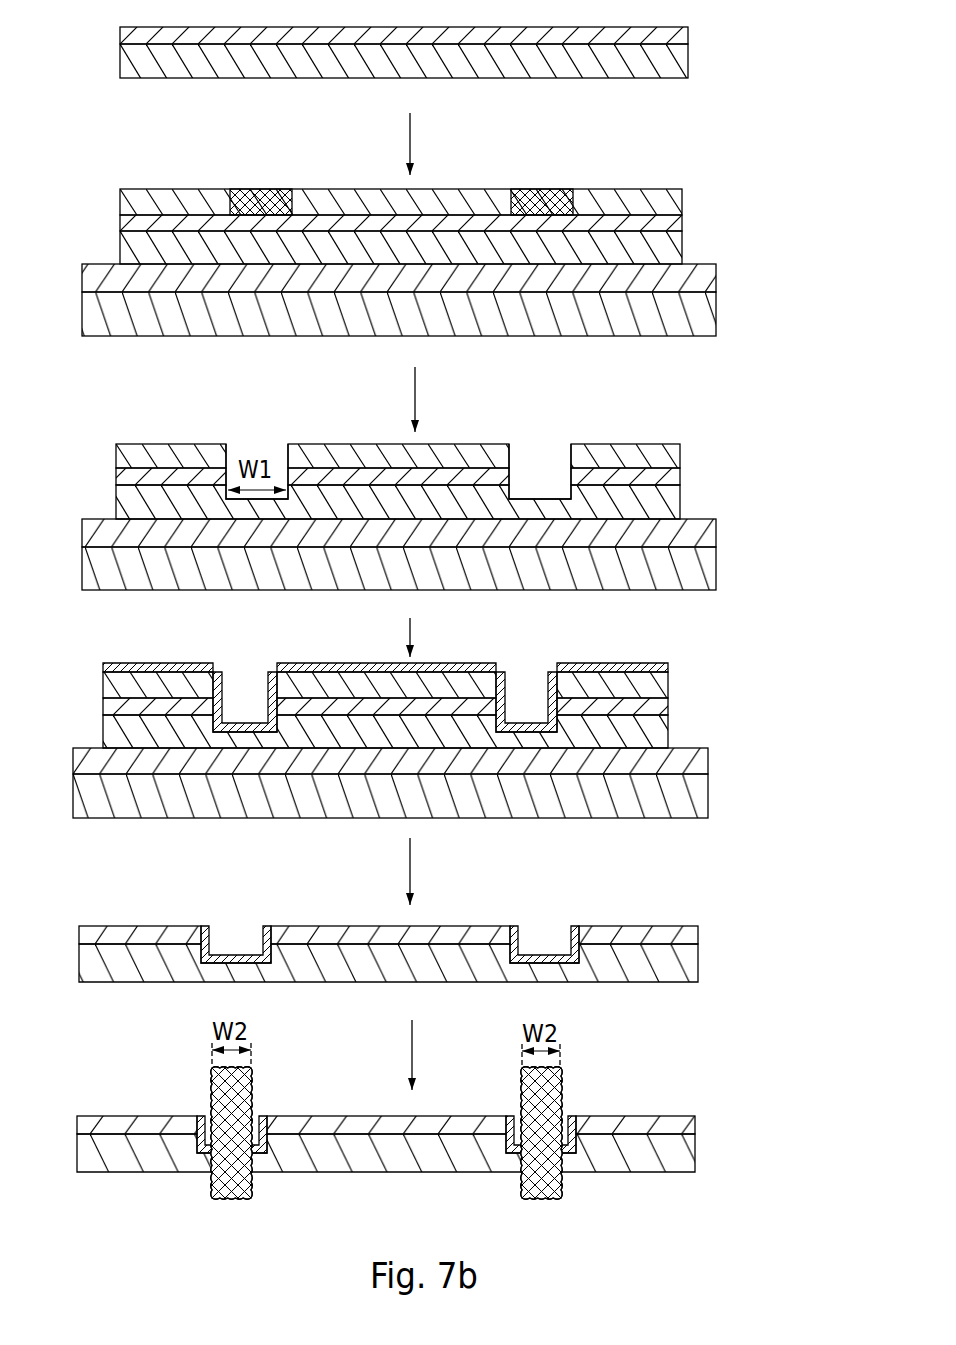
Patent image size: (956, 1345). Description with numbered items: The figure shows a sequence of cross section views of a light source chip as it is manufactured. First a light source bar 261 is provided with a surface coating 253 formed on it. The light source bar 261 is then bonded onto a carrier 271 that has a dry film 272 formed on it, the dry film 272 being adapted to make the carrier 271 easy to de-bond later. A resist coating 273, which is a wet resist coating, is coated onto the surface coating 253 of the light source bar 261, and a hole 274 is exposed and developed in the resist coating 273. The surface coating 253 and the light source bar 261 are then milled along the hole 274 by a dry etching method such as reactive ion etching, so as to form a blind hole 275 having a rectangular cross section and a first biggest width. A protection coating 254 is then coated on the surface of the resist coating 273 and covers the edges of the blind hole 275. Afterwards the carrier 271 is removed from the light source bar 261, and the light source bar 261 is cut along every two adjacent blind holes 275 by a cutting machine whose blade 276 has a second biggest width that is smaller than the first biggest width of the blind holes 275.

The surface coating 253 is at (675, 40).
The light source bar 261 is at (670, 70).
The carrier 271 is at (687, 324).
The dry film 272 is at (693, 287).
The resist coating 273 is at (655, 203).
The hole 274 is at (533, 203).
The blind hole 275 is at (533, 490).
The protection coating 254 is at (500, 682).
The blade 276 is at (553, 1095).